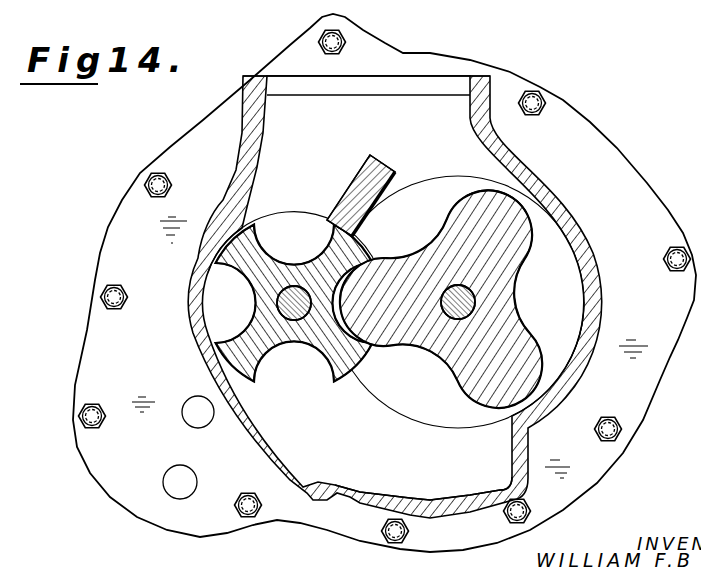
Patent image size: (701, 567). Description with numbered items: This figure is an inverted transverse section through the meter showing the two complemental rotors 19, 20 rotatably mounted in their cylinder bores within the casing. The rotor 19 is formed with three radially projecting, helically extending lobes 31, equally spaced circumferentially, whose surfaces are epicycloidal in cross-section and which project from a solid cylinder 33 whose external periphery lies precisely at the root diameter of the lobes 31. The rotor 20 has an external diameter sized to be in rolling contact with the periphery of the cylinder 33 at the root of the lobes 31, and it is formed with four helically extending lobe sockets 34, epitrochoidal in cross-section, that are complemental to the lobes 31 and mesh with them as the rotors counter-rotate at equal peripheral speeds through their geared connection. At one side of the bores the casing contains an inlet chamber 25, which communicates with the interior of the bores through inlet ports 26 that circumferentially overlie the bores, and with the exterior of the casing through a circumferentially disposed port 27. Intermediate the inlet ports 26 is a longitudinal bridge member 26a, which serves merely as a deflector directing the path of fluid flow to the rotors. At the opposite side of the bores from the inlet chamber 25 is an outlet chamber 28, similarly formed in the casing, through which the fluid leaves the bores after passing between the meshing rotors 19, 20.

The rotor 19 is at (507, 289).
The rotor 20 is at (282, 345).
The inlet chamber 25 is at (410, 110).
The inlet ports 26 is at (398, 177).
The longitudinal bridge member 26a is at (367, 204).
The circumferentially disposed port 27 is at (333, 83).
The outlet chamber 28 is at (385, 480).
The lobes 31 is at (507, 213).
The solid cylinder 33 is at (522, 318).
The lobe sockets 34 is at (284, 226).